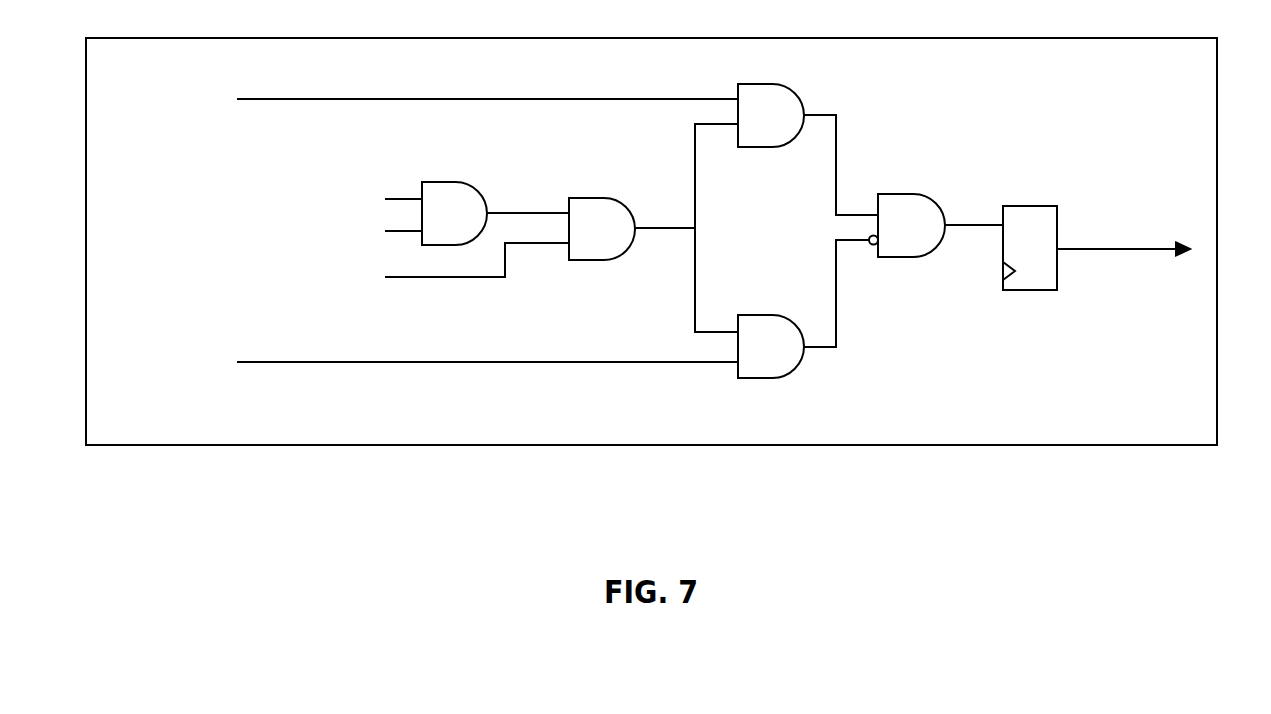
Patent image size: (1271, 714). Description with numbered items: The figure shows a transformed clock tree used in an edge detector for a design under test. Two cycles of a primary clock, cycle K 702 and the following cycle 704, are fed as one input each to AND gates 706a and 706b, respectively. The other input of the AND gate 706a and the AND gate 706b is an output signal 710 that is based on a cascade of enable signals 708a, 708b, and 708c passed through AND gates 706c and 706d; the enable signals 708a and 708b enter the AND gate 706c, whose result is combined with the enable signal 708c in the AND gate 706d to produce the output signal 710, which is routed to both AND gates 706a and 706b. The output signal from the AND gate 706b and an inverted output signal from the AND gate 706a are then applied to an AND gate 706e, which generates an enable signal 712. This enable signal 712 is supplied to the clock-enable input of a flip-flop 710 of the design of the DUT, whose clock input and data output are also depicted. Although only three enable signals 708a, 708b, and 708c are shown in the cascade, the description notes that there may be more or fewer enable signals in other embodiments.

The cycle K of primary clock 702 is at (430, 356).
The cycle K+1 of primary clock 704 is at (430, 98).
The AND gate 706a is at (808, 307).
The AND gate 706b is at (808, 149).
The AND gate 706c is at (495, 213).
The AND gate 706d is at (602, 229).
The AND gate 706e is at (911, 225).
The enable signal 708a is at (339, 193).
The enable signal 708b is at (339, 231).
The enable signal 708c is at (413, 265).
The output signal / flip-flop 710 is at (912, 239).
The enable signal 712 is at (974, 210).